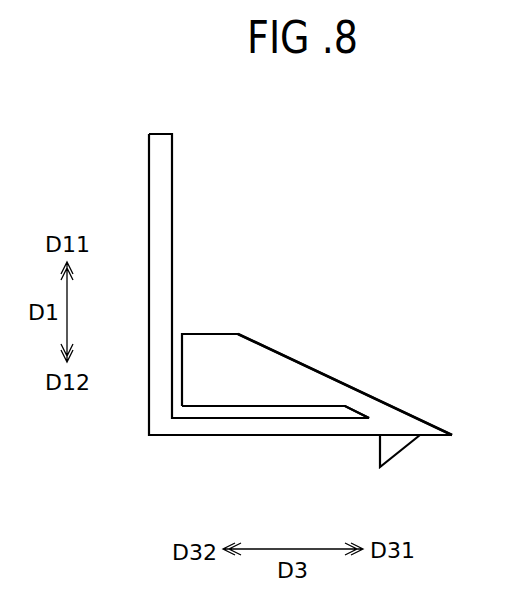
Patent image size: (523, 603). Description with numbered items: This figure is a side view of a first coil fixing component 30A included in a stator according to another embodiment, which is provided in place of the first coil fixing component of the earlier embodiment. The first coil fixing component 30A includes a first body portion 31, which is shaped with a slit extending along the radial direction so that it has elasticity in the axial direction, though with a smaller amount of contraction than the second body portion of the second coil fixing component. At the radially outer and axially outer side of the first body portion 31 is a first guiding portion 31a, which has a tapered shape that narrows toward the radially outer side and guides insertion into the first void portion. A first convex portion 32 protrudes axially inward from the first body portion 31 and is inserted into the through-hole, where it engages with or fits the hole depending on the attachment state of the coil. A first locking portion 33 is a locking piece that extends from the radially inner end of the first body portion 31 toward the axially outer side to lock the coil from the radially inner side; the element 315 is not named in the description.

The first coil fixing component 30A is at (401, 212).
The first body portion 31 is at (256, 380).
The first guiding portion 31a is at (316, 372).
The plate portion 315 is at (196, 408).
The first convex portion 32 is at (392, 445).
The first locking portion 33 is at (148, 177).